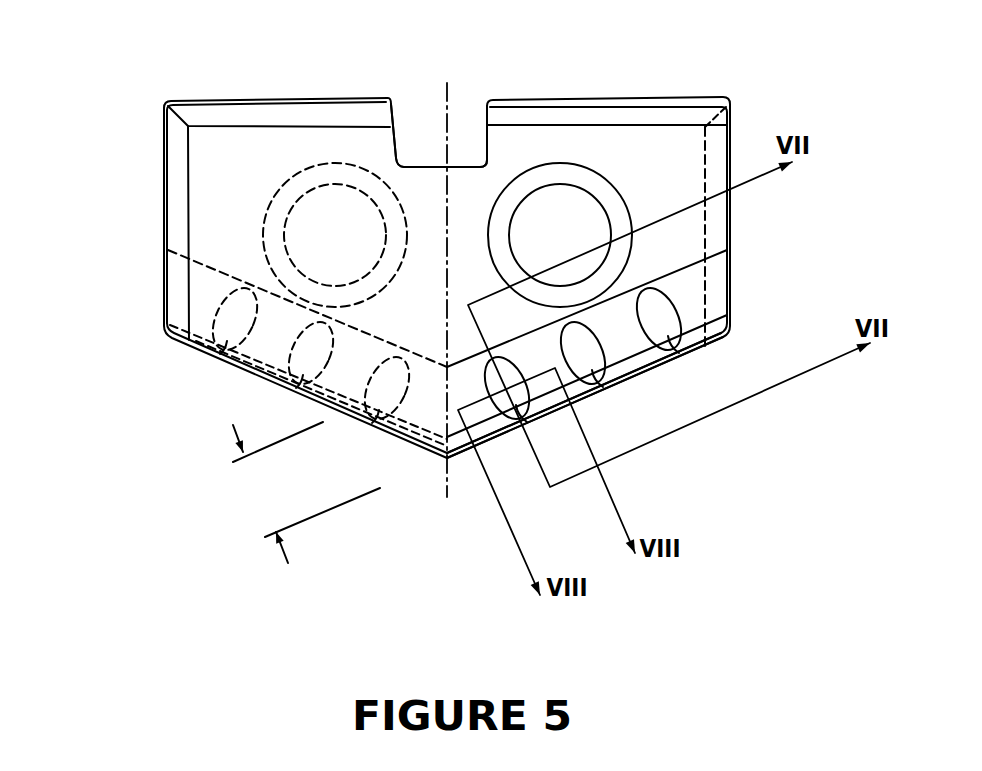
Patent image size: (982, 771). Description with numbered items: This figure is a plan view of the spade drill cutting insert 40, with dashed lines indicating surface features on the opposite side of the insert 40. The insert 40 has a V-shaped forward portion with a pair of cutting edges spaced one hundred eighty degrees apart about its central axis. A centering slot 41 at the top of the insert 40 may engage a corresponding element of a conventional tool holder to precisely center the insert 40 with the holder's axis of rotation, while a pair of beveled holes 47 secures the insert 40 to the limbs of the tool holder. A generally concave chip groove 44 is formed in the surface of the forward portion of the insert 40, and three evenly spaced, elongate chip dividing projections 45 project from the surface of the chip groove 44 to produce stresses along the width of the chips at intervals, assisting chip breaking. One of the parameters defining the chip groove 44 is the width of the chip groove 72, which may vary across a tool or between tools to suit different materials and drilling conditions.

The insert 40 is at (151, 179).
The centering slot 41 is at (469, 114).
The chip groove 44 is at (692, 293).
The chip dividing projections 45 is at (222, 352).
The beveled holes 47 is at (347, 208).
The width of the chip groove 72 is at (285, 556).